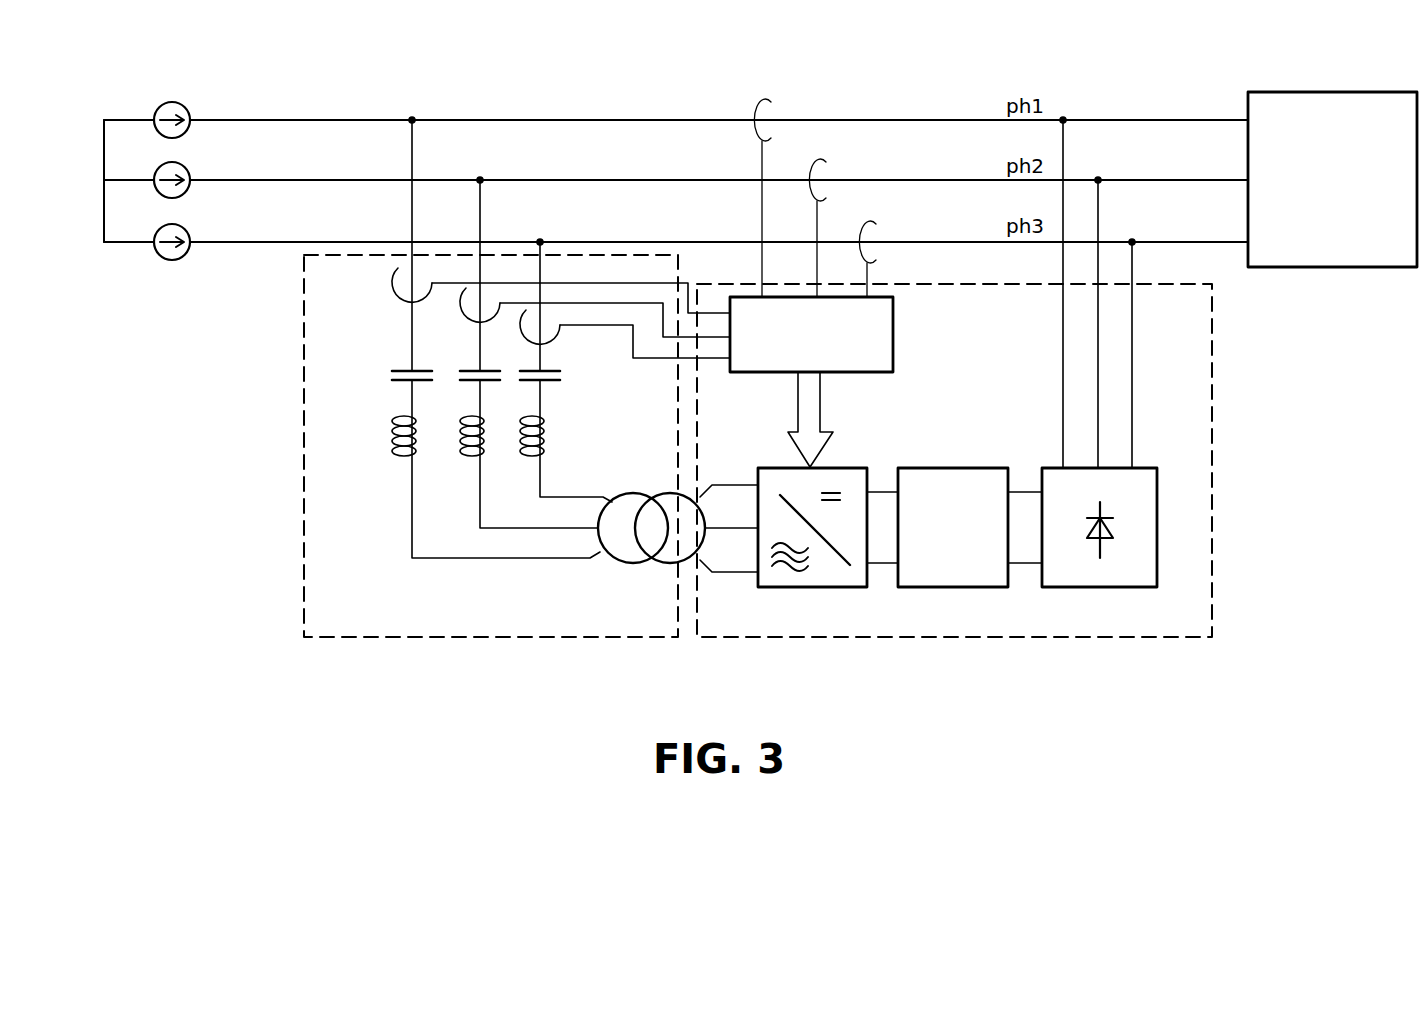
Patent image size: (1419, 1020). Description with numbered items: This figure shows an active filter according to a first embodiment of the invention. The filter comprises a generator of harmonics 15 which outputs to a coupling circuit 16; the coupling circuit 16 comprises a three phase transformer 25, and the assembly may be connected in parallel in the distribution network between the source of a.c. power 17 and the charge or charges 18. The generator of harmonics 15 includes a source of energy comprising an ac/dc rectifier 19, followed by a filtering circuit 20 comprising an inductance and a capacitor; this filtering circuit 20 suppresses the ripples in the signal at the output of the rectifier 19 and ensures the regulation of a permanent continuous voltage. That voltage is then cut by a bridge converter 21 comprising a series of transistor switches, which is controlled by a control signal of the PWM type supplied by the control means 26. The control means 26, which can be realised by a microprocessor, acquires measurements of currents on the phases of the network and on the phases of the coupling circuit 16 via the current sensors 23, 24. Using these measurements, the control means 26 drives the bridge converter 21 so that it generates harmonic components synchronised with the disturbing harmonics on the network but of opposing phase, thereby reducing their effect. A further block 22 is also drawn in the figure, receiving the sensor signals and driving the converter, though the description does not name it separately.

The generator of harmonics 15 is at (995, 377).
The coupling circuit 16 is at (489, 397).
The source of a.c. power 17 is at (164, 262).
The charge 18 is at (1362, 270).
The ac/dc rectifier 19 is at (1100, 588).
The filtering circuit 20 is at (955, 588).
The bridge converter 21 is at (805, 588).
The control unit 22 is at (893, 343).
The current sensor 23 is at (800, 113).
The current sensor 24 is at (397, 326).
The three phase transformer 25 is at (640, 563).
The control means 26 is at (355, 445).